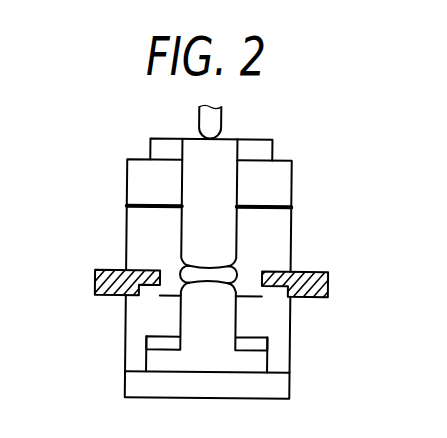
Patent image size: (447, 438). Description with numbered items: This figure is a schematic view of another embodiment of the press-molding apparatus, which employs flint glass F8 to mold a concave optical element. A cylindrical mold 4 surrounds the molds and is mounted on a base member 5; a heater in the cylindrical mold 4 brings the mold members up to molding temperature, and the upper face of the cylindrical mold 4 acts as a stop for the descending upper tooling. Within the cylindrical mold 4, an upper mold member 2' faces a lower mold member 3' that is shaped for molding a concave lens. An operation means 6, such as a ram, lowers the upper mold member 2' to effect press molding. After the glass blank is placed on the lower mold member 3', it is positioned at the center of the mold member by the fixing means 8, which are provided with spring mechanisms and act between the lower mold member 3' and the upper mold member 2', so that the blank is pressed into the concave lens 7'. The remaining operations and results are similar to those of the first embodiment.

The operation means 6 is at (206, 128).
The upper mold member 2' is at (248, 202).
The cylindrical mold 4 is at (268, 237).
The concave lens 7' is at (161, 245).
The fixing means 8 is at (96, 288).
The lower mold member 3' is at (243, 327).
The base member 5 is at (282, 388).